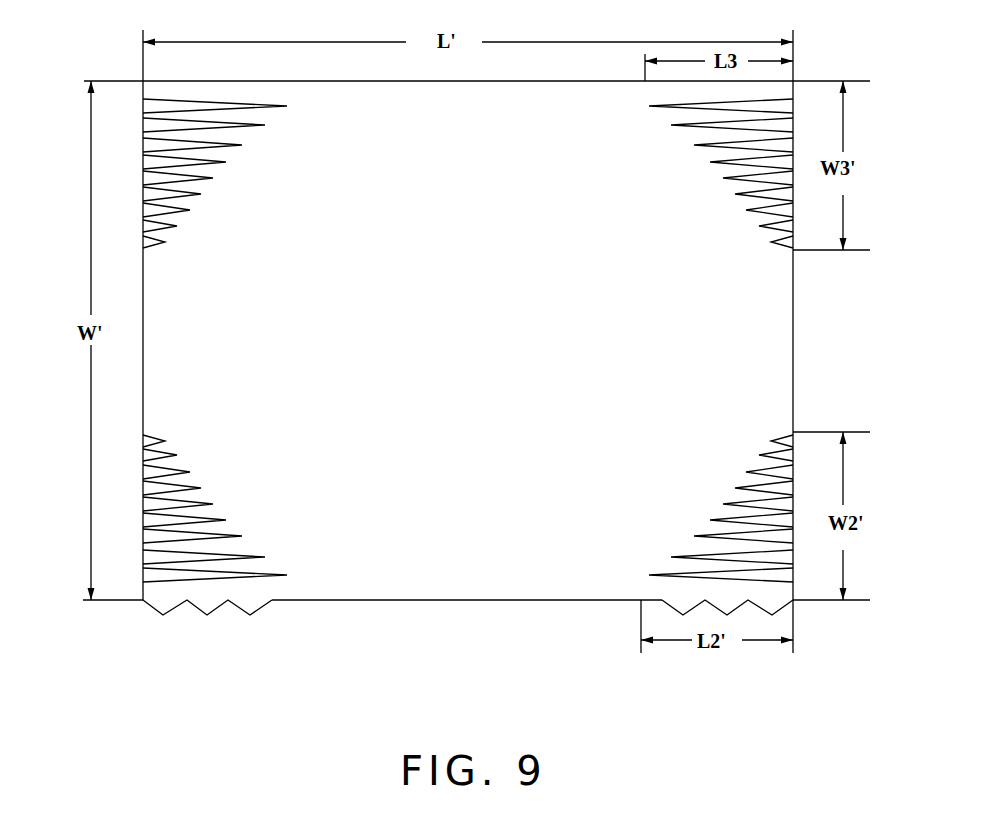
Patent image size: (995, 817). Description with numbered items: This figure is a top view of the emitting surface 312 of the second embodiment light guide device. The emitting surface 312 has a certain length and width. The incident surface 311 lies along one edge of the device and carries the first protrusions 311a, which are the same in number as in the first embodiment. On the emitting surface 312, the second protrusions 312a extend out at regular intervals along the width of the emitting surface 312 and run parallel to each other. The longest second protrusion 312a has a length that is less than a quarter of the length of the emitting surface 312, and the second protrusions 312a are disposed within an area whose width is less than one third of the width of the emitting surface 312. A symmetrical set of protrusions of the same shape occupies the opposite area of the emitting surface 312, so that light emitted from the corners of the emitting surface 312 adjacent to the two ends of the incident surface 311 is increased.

The incident surface 311 is at (373, 602).
The first protrusions 311a is at (165, 606).
The emitting surface 312 is at (740, 343).
The second protrusions 312a is at (167, 575).